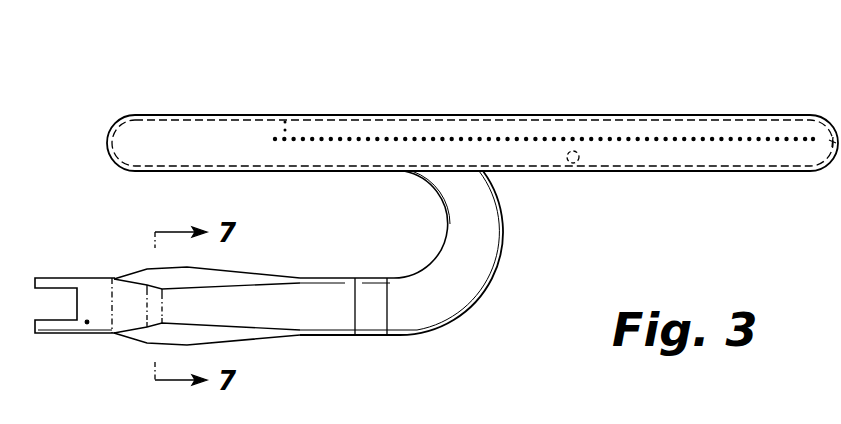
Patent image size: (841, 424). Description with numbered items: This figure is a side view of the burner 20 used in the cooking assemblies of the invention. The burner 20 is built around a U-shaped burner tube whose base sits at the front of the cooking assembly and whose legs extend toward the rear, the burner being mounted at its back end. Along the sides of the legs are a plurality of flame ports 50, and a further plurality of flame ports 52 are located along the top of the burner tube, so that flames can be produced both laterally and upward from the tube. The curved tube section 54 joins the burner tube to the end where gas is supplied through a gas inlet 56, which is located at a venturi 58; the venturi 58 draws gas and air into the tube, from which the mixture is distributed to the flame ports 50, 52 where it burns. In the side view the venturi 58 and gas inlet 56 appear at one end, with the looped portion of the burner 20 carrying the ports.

The burner 20 is at (107, 77).
The flame ports 50 is at (597, 139).
The flame ports 52 is at (287, 121).
The tubular arm 54 is at (412, 175).
The gas inlet 56 is at (96, 333).
The venturi 58 is at (237, 337).